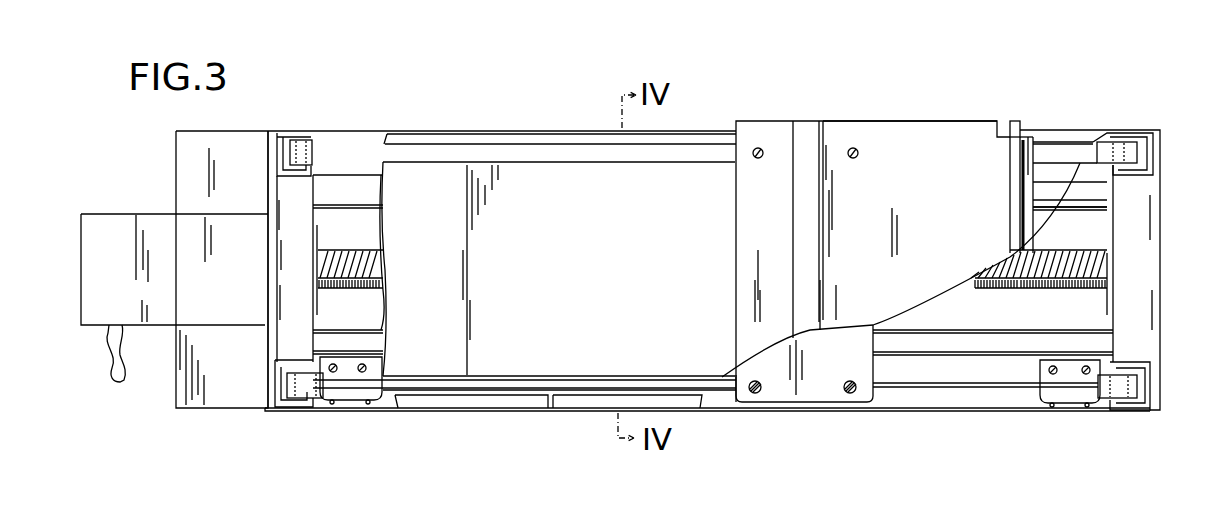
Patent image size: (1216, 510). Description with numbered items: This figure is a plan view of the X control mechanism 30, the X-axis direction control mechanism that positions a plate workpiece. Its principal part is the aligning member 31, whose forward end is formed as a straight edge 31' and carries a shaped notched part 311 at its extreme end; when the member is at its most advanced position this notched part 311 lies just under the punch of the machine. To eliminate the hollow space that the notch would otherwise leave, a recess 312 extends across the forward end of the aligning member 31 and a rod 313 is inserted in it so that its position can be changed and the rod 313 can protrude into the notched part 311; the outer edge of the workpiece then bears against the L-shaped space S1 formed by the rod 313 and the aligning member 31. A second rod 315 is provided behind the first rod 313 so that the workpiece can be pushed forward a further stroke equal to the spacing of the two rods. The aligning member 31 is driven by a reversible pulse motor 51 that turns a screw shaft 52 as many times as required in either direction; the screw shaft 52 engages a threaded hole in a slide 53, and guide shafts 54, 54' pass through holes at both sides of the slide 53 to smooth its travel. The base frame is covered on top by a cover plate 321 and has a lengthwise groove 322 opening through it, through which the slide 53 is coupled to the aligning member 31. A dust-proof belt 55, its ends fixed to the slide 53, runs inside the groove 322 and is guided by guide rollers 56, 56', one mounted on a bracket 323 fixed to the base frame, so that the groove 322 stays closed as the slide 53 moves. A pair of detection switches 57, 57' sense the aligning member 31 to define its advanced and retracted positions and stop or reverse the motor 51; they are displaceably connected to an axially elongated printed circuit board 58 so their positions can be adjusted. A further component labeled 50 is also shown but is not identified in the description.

The X control mechanism 30 is at (1211, 337).
The aligning member 31 is at (857, 238).
The straight edge 31' is at (1121, 235).
The notched part 311 is at (1000, 119).
The recess 312 is at (1010, 172).
The rod 313 is at (1013, 237).
The second rod 315 is at (808, 138).
The cover plate 321 is at (535, 360).
The groove 322 is at (475, 152).
The bracket 323 is at (277, 390).
The support frame 50 is at (908, 371).
The reversible pulse motor 51 is at (141, 330).
The screw shaft 52 is at (1013, 290).
The slide 53 is at (805, 395).
The guide shaft 54 is at (727, 205).
The guide shaft 54' is at (1016, 355).
The dust-proof belt 55 is at (346, 150).
The guide roller 56 is at (293, 267).
The guide roller 56' is at (1131, 264).
The detection switch 57 is at (1088, 411).
The detection switch 57' is at (369, 406).
The printed circuit board 58 is at (588, 385).
The L-shaped space S1 is at (1028, 130).